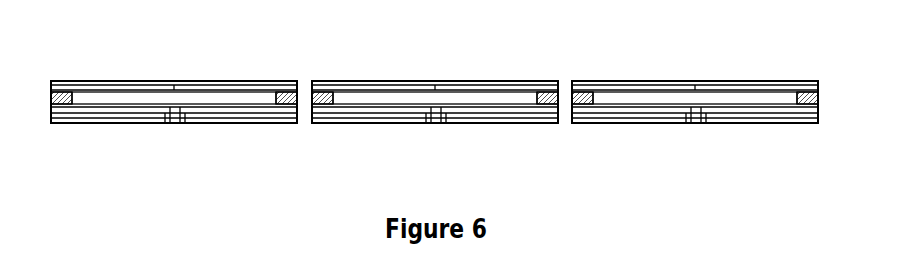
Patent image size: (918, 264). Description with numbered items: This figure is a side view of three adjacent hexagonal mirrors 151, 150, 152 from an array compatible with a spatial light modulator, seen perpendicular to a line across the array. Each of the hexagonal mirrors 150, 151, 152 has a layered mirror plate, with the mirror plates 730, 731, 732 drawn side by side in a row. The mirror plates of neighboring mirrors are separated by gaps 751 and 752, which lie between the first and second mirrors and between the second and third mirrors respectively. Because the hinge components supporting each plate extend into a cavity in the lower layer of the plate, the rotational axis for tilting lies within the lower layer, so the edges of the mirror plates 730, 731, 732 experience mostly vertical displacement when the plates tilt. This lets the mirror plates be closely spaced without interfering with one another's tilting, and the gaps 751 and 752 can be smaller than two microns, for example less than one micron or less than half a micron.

The hexagonal mirror 150 is at (454, 60).
The hexagonal mirror 151 is at (199, 60).
The hexagonal mirror 152 is at (738, 60).
The mirror plate 730 is at (149, 80).
The mirror plate 731 is at (412, 80).
The mirror plate 732 is at (673, 80).
The gap 751 is at (304, 118).
The gap 752 is at (565, 114).